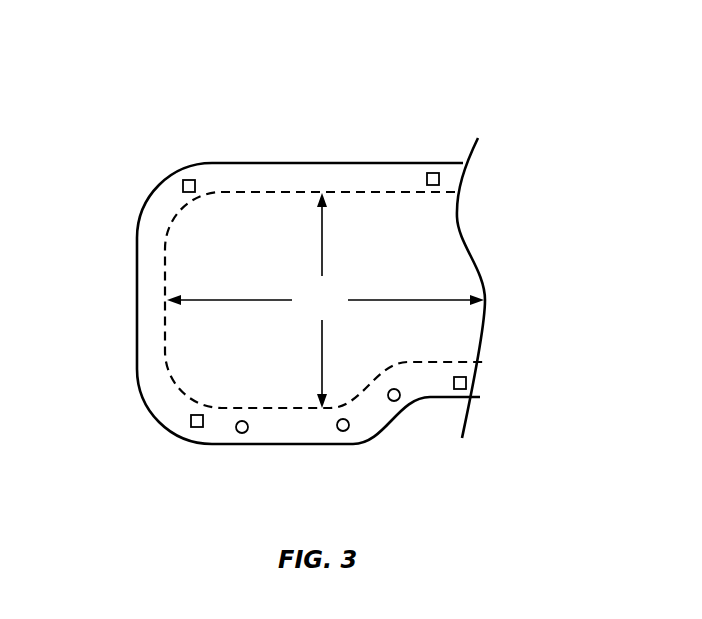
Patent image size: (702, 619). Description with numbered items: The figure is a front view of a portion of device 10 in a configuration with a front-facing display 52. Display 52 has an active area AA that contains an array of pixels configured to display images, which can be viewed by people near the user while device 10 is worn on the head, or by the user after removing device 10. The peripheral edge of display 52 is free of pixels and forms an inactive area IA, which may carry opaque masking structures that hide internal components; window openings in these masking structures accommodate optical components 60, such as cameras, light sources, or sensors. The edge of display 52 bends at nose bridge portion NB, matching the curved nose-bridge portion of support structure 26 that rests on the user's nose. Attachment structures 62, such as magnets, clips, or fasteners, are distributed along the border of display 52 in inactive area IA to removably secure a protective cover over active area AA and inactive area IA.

The device 10 is at (482, 75).
The support structure 26 is at (137, 300).
The display 52 is at (457, 342).
The optical components 60 is at (242, 433).
The attachment structures 62 is at (189, 180).
The active area AA is at (325, 300).
The inactive area IA is at (298, 433).
The nose bridge portion NB is at (462, 410).